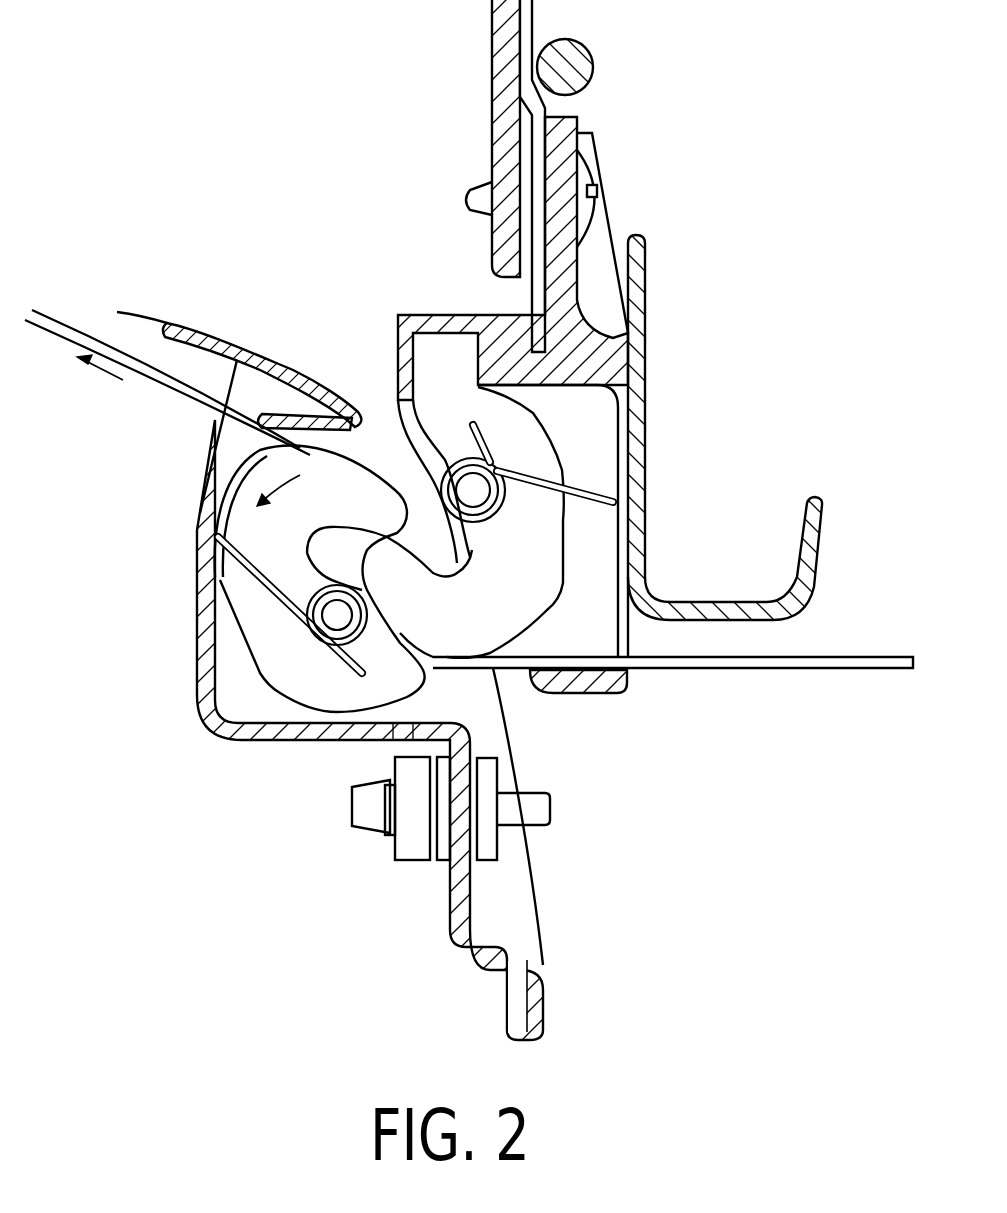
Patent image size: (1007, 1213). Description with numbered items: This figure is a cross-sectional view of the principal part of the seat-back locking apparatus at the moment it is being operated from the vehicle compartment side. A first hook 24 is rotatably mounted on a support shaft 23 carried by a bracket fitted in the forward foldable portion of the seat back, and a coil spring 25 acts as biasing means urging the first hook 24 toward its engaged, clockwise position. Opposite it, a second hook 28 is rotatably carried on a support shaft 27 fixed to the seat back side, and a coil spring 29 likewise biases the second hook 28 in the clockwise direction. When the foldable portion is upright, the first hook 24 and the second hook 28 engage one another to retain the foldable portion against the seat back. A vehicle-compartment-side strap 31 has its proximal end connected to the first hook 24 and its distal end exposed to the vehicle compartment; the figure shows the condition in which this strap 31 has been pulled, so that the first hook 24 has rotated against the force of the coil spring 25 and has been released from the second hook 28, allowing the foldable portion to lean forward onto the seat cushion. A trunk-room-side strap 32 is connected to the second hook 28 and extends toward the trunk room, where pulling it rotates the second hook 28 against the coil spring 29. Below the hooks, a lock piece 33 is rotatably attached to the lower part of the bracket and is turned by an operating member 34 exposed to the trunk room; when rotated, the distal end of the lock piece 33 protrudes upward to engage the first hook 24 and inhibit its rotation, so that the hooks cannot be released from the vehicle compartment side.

The support shaft 23 is at (337, 614).
The first hook 24 is at (240, 518).
The coil spring 25 is at (243, 570).
The support shaft 27 is at (473, 495).
The second hook 28 is at (540, 560).
The coil spring 29 is at (583, 487).
The vehicle-compartment-side strap 31 is at (68, 327).
The trunk-room-side strap 32 is at (830, 670).
The lock piece 33 is at (403, 843).
The operating member 34 is at (537, 812).